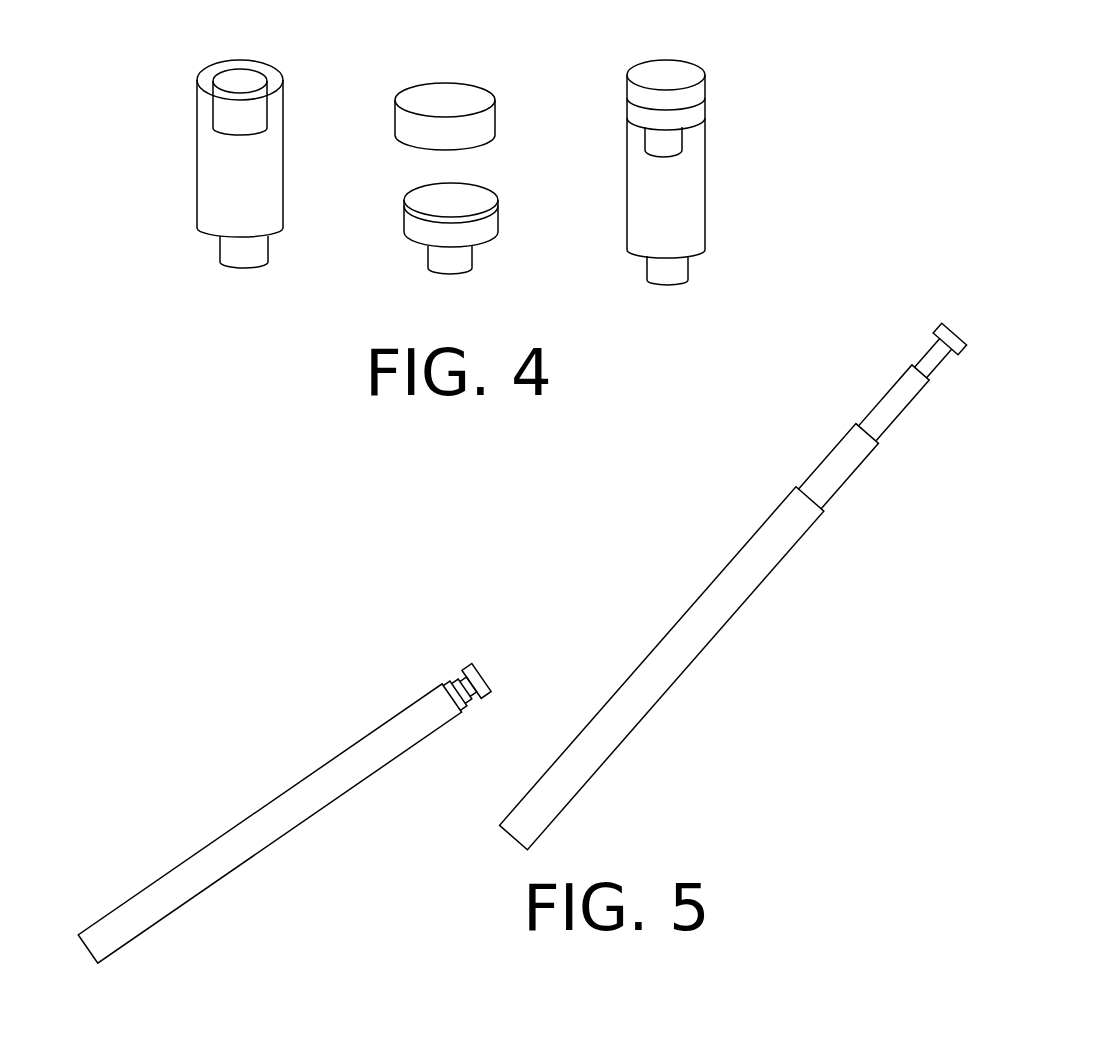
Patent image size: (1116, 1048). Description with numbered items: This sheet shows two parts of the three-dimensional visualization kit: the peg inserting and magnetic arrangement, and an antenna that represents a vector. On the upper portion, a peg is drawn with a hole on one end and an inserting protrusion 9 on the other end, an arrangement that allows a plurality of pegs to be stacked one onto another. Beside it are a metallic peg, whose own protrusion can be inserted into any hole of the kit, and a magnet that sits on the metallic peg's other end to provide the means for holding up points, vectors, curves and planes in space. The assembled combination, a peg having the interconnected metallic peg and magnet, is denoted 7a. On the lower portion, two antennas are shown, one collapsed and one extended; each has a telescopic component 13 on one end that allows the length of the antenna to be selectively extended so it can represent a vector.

In FIG. 4, the peg with interconnected metallic peg and magnet 7a is at (707, 154).
In FIG. 4, the inserting protrusion 9 is at (245, 77).
In FIG. 5, the telescopic component 13 is at (862, 433).